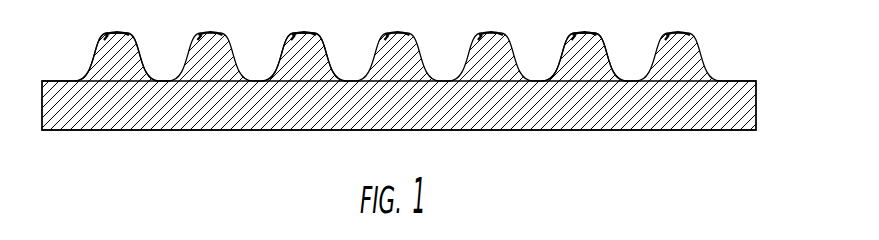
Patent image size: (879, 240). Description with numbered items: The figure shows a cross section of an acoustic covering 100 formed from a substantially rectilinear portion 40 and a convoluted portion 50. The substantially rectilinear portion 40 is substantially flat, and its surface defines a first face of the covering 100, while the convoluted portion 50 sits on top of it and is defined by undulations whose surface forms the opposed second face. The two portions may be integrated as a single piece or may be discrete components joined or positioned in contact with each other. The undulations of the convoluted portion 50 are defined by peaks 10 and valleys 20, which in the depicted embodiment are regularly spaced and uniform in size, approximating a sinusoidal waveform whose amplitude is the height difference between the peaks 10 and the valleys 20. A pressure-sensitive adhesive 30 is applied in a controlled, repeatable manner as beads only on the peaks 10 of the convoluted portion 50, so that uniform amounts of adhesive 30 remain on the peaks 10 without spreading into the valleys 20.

The peaks 10 is at (113, 62).
The valleys 20 is at (163, 73).
The pressure-sensitive adhesive 30 is at (307, 35).
The substantially rectilinear portion 40 is at (498, 92).
The convoluted portion 50 is at (592, 58).
The covering 100 is at (435, 103).